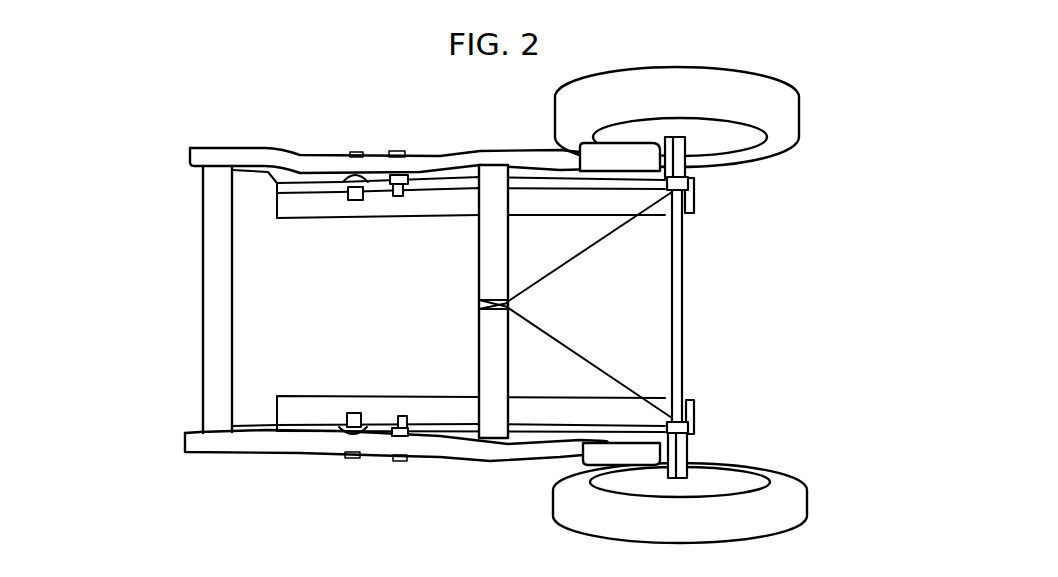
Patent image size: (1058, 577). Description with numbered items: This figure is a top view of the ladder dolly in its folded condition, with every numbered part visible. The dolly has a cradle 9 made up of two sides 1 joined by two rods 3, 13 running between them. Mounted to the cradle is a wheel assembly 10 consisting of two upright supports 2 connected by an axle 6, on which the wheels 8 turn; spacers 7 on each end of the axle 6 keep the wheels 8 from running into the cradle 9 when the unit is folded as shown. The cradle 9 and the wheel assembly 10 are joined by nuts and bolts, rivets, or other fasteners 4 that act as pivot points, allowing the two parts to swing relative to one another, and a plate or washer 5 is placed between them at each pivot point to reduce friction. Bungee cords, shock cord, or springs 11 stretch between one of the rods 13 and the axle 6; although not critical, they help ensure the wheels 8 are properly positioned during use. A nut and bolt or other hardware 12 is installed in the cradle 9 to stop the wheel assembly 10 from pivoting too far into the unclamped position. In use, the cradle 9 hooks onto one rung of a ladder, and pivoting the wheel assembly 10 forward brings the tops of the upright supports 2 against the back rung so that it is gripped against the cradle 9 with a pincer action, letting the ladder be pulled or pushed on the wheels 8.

The sides 1 is at (200, 433).
The upright supports 2 is at (382, 405).
The rod 3 is at (232, 403).
The fasteners 4 is at (348, 410).
The plate or washer 5 is at (345, 433).
The axle 6 is at (665, 303).
The spacers 7 is at (682, 432).
The wheels 8 is at (780, 138).
The cradle 9 is at (163, 190).
The wheel assembly 10 is at (798, 172).
The bungee cords, shock cord, or springs 11 is at (509, 304).
The nut and bolt or other hardware 12 is at (402, 415).
The rod 13 is at (482, 372).